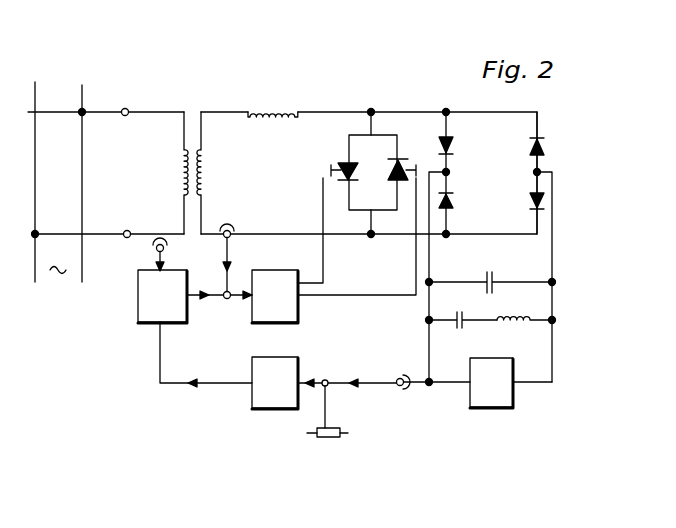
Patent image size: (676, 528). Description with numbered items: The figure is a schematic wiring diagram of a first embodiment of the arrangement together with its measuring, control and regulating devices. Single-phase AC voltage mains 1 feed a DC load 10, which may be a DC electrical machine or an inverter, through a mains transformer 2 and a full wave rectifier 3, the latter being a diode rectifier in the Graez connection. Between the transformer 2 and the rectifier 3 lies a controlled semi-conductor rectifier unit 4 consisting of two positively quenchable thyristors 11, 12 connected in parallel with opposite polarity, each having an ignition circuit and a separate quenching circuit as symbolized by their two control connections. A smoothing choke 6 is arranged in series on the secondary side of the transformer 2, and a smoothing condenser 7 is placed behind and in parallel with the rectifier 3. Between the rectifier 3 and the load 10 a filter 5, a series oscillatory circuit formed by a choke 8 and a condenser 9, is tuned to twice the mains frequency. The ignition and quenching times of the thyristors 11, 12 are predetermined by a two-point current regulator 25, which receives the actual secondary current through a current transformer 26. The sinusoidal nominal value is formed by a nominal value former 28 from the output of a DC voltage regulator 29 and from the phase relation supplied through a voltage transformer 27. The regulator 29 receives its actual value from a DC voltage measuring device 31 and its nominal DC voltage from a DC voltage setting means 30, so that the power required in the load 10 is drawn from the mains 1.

The single-phase AC voltage mains 1 is at (66, 169).
The mains transformer 2 is at (135, 169).
The full wave rectifier 3 is at (497, 167).
The controlled semi-conductor rectifier unit 4 is at (378, 184).
The filter 5 is at (490, 342).
The smoothing choke 6 is at (293, 106).
The smoothing condenser 7 is at (496, 274).
The choke 8 is at (518, 326).
The condenser 9 is at (454, 329).
The DC load 10 is at (515, 397).
The controlled semi-conductor rectifier 11 is at (345, 162).
The controlled semi-conductor rectifier 12 is at (400, 159).
The two-point current regulator 25 is at (301, 311).
The current transformer 26 is at (236, 228).
The voltage transformer 27 is at (166, 250).
The nominal value former 28 is at (138, 311).
The DC voltage regulator 29 is at (300, 372).
The DC voltage setting means 30 is at (330, 438).
The DC voltage measuring device 31 is at (397, 387).